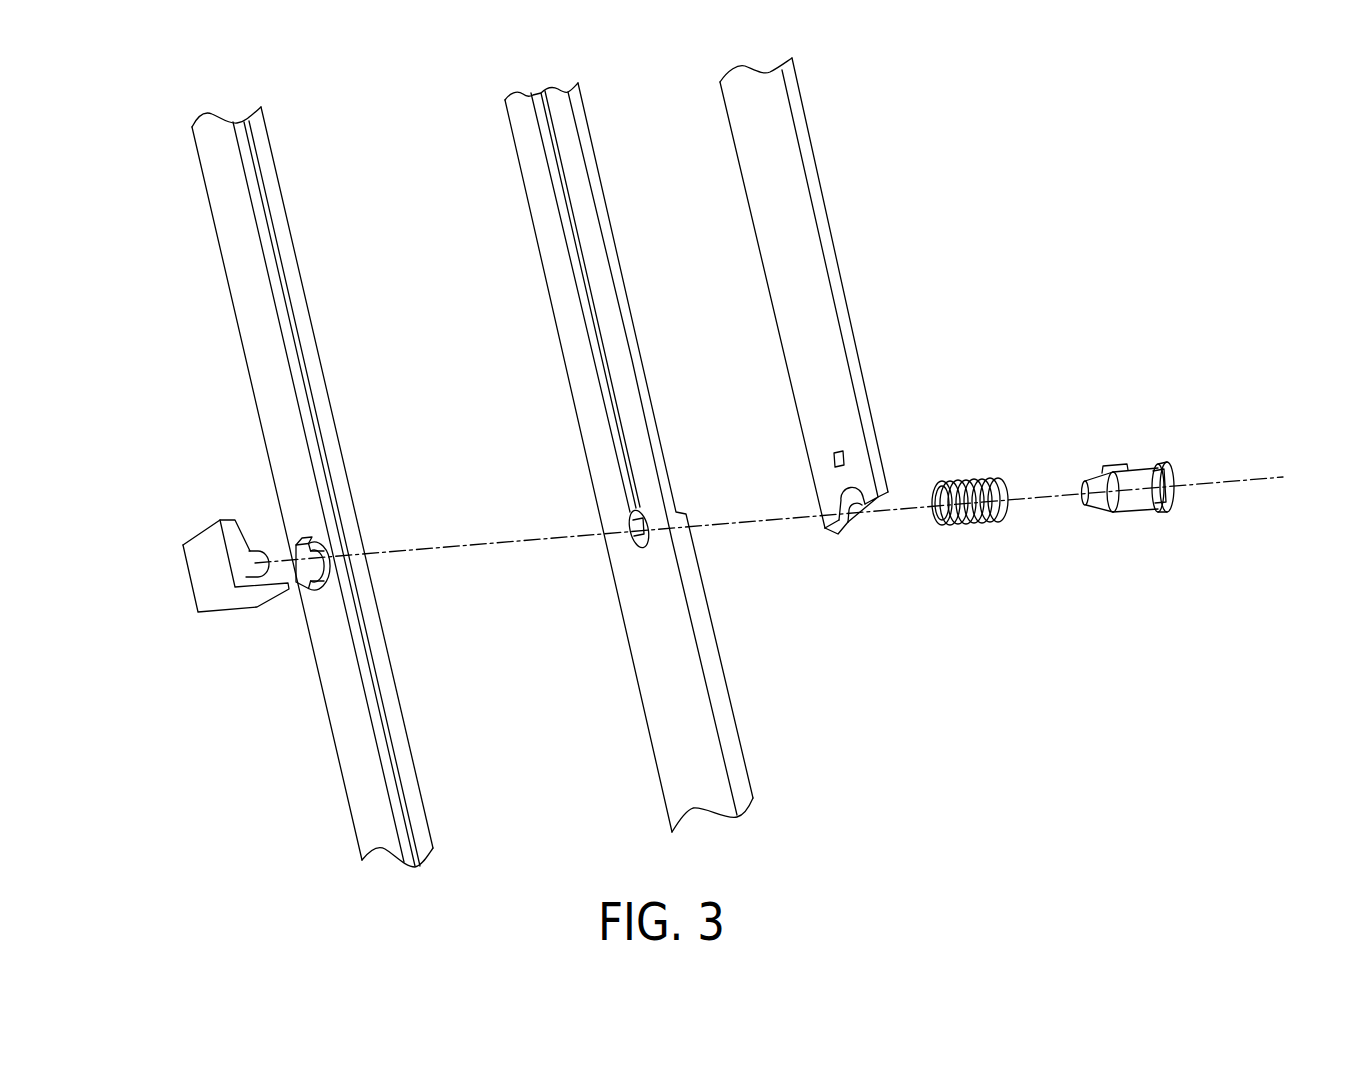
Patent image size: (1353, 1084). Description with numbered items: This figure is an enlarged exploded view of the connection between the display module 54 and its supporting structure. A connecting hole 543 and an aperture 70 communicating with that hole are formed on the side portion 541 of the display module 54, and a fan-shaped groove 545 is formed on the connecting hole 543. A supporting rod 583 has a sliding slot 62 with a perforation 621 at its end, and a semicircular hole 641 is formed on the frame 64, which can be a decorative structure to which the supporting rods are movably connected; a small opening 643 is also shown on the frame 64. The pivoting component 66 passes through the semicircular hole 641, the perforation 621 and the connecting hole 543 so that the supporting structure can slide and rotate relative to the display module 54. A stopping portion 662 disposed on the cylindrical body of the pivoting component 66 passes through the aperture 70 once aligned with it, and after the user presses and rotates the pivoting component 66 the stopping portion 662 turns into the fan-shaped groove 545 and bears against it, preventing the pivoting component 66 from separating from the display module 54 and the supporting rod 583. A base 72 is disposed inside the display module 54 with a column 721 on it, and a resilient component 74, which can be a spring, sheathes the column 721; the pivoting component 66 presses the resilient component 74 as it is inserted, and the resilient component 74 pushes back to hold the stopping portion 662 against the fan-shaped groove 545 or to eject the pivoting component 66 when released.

The display module 54 is at (268, 487).
The side portion 541 is at (286, 240).
The connecting hole 543 is at (318, 548).
The fan-shaped groove 545 is at (322, 576).
The supporting rod 583 is at (644, 457).
The sliding slot 62 is at (601, 372).
The perforation 621 is at (637, 502).
The frame 64 is at (843, 296).
The semicircular hole 641 is at (858, 496).
The aperture 643 is at (836, 452).
The pivoting component 66 is at (1128, 496).
The stopping portion 662 is at (1114, 465).
The aperture 70 is at (368, 525).
The base 72 is at (236, 559).
The column 721 is at (252, 556).
The resilient component 74 is at (976, 527).